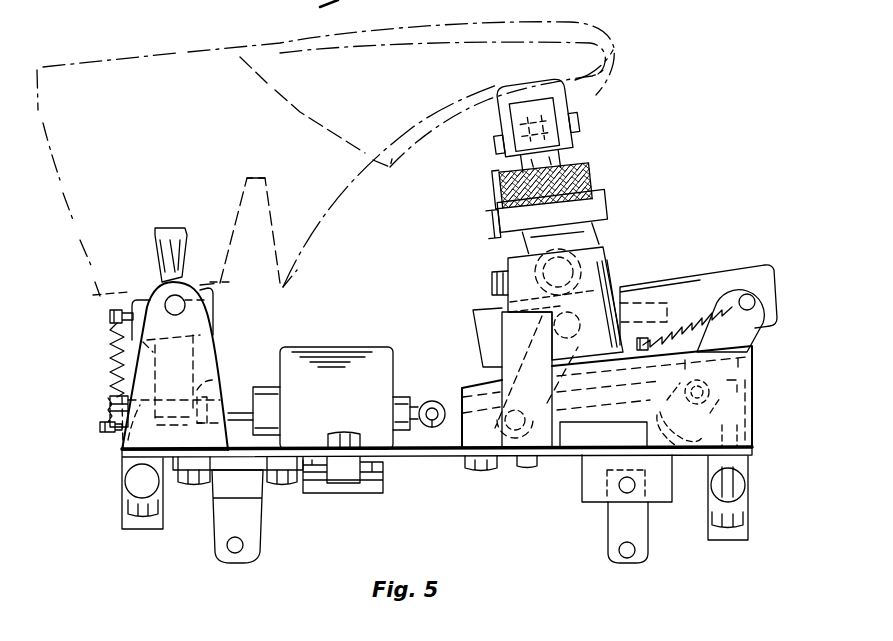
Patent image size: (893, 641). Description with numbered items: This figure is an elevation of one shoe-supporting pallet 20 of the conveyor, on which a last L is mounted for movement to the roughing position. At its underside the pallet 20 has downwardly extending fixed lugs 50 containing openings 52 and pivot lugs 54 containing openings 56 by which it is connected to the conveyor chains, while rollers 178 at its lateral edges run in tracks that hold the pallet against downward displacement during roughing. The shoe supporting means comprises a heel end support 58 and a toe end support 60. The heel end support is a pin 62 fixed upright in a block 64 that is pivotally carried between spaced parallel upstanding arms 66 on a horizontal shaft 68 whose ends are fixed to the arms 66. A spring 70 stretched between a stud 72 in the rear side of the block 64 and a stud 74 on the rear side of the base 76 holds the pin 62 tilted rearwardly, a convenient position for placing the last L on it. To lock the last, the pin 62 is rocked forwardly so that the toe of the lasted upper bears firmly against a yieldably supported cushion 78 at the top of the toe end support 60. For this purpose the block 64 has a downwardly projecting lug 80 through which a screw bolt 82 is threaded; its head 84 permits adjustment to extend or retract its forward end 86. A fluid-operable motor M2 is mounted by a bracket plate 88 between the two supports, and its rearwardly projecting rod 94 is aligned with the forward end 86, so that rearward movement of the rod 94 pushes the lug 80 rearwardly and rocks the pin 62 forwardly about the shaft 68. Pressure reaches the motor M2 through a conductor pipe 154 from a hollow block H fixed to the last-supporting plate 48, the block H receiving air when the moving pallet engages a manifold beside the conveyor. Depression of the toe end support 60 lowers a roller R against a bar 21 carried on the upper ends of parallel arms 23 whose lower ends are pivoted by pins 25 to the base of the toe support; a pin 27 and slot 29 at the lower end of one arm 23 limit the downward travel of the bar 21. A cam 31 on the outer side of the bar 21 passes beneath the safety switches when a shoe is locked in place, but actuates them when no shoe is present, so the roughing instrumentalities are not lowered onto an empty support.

The pallet 20 is at (481, 497).
The bar 21 is at (710, 278).
The arms 23 is at (765, 333).
The pins 25 is at (753, 383).
The pin 27 is at (660, 420).
The slot 29 is at (753, 412).
The cam 31 is at (658, 302).
The last-supporting plate 48 is at (753, 450).
The fixed lugs 50 is at (255, 522).
The openings 52 is at (227, 546).
The pivot lugs 54 is at (607, 525).
The openings 56 is at (618, 553).
The heel end support 58 is at (90, 308).
The toe end support 60 is at (613, 145).
The pin 62 is at (154, 240).
The block 64 is at (217, 320).
The arms 66 is at (152, 300).
The shaft 68 is at (172, 316).
The spring 70 is at (110, 368).
The stud 72 is at (110, 315).
The stud 74 is at (99, 427).
The base 76 is at (126, 487).
The cushion 78 is at (538, 90).
The lug 80 is at (197, 355).
The screw bolt 82 is at (110, 445).
The head 84 is at (109, 402).
The forward end 86 is at (200, 395).
The bracket plate 88 is at (350, 488).
The rod 94 is at (256, 410).
The conductor pipe 154 is at (432, 428).
The rollers 178 is at (138, 486).
The last L is at (128, 52).
The roller R is at (566, 303).
The block H is at (503, 338).
The motor M2 is at (345, 398).